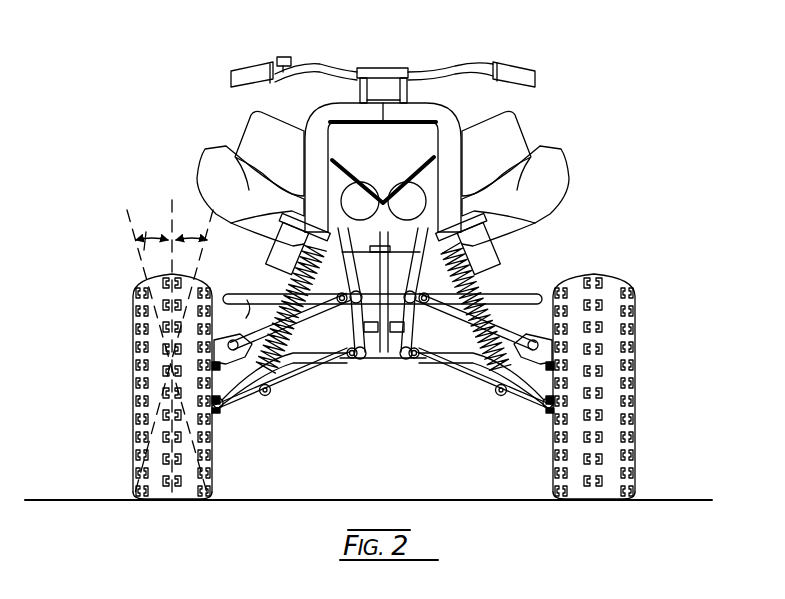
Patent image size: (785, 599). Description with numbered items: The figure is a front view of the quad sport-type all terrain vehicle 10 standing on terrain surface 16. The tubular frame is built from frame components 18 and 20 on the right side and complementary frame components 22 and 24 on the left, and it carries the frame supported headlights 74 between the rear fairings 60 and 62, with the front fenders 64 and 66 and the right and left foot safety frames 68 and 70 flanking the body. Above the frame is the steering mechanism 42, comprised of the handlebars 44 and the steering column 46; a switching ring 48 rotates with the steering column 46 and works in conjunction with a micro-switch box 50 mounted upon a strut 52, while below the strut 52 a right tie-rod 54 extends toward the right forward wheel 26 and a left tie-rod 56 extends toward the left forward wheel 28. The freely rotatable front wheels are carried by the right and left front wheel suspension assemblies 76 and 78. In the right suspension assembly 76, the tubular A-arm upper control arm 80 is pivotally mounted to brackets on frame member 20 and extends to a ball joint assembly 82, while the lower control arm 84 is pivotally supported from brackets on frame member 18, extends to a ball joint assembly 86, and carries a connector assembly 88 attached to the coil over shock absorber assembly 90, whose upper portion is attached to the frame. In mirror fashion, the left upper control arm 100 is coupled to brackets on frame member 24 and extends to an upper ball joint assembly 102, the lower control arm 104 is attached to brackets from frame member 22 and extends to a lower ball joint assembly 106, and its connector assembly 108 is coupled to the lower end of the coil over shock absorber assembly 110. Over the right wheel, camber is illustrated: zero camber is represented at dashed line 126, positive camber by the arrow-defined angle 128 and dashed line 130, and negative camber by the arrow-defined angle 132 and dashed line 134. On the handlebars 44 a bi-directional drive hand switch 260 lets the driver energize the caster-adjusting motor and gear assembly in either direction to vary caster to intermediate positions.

The all terrain vehicle 10 is at (360, 250).
The terrain surface 16 is at (661, 499).
The frame component 18 is at (362, 315).
The frame component 20 is at (340, 308).
The frame component 22 is at (428, 308).
The frame component 24 is at (405, 360).
The right forward wheel 26 is at (142, 369).
The left forward wheel 28 is at (630, 369).
The steering mechanism 42 is at (460, 28).
The handlebars 44 is at (347, 70).
The steering column 46 is at (388, 335).
The switching ring 48 is at (379, 210).
The micro-switch box 50 is at (384, 222).
The strut 52 is at (280, 250).
The right tie-rod 54 is at (266, 396).
The left tie-rod 56 is at (513, 402).
The rear fairing 60 is at (251, 118).
The rear fairing 62 is at (517, 127).
The front fender 64 is at (219, 155).
The front fender 66 is at (547, 165).
The right foot safety frame 68 is at (236, 314).
The left foot safety frame 70 is at (520, 302).
The headlights 74 is at (343, 215).
The right front wheel suspension assembly 76 is at (299, 450).
The left front wheel suspension assembly 78 is at (483, 452).
The upper control arm 80 is at (270, 318).
The ball joint assembly 82 is at (233, 416).
The lower control arm 84 is at (287, 364).
The ball joint assembly 86 is at (218, 420).
The connector assembly 88 is at (271, 395).
The coil over shock absorber assembly 90 is at (296, 282).
The upper control arm 100 is at (497, 318).
The upper ball joint assembly 102 is at (531, 398).
The control arm 104 is at (473, 366).
The lower ball joint assembly 106 is at (548, 420).
The connector assembly 108 is at (497, 392).
The coil over shock absorber assembly 110 is at (473, 278).
The dashed line 126 is at (177, 205).
The arrow-defined angle 128 is at (147, 240).
The dashed line 130 is at (133, 222).
The arrow-defined angle 132 is at (187, 205).
The dashed line 134 is at (204, 212).
The bi-directional drive hand switch 260 is at (282, 60).